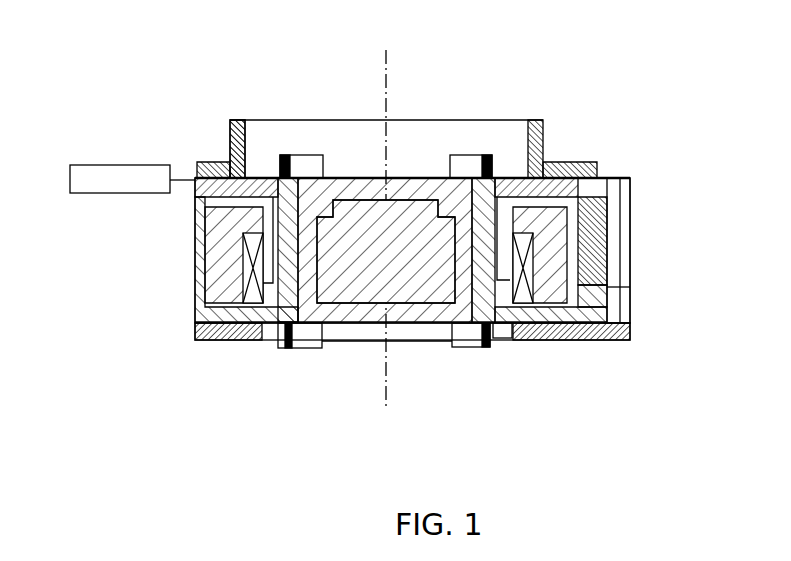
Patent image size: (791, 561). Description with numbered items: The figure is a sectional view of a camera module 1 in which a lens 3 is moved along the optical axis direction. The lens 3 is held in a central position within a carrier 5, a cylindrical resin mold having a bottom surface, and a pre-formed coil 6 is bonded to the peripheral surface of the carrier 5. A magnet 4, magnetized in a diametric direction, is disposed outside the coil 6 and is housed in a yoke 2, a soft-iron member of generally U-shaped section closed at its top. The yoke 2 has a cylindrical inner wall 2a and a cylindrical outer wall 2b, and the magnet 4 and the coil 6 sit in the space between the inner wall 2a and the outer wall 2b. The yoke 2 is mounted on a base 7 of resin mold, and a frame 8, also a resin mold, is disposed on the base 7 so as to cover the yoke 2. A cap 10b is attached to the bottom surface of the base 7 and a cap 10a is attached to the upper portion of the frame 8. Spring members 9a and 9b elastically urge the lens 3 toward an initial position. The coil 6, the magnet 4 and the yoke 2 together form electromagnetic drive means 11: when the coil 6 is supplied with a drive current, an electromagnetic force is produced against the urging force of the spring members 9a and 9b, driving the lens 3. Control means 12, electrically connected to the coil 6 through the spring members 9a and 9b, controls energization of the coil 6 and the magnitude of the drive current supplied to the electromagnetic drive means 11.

The camera module 1 is at (497, 108).
The yoke 2 is at (607, 236).
The inner wall 2a is at (258, 225).
The outer wall 2b is at (196, 243).
The lens 3 is at (430, 348).
The magnet 4 is at (577, 164).
The carrier 5 is at (485, 348).
The coil 6 is at (522, 347).
The base 7 is at (598, 302).
The frame 8 is at (605, 200).
The spring member 9a is at (267, 177).
The spring member 9b is at (267, 348).
The cap 10a is at (545, 128).
The cap 10b is at (592, 345).
The electromagnetic drive means 11 is at (707, 428).
The control means 12 is at (107, 165).